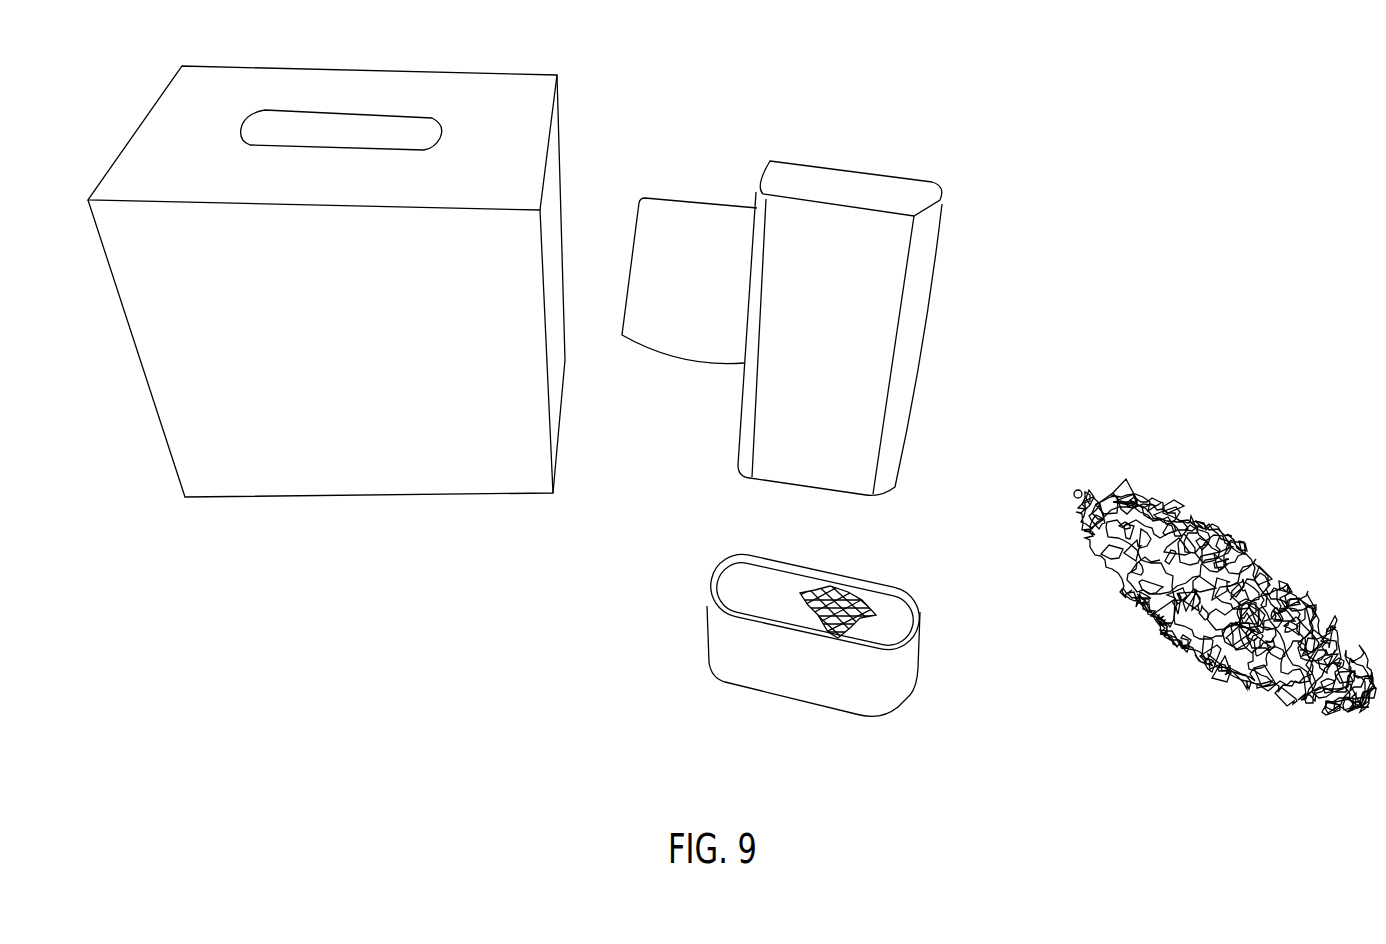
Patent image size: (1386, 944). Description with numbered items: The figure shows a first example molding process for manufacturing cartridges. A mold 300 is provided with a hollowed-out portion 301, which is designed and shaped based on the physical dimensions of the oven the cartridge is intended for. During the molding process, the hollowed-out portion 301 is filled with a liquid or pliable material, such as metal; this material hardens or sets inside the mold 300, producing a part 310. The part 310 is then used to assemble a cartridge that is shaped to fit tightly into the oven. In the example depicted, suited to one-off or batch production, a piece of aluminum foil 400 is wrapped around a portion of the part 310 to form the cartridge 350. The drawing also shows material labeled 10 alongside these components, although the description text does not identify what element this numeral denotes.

The mold 300 is at (340, 263).
The hollowed-out portion 301 is at (423, 136).
The part 310 is at (926, 196).
The piece of aluminum foil 400 is at (689, 348).
The cartridge 350 is at (898, 611).
The crumpled material 10 is at (843, 604).